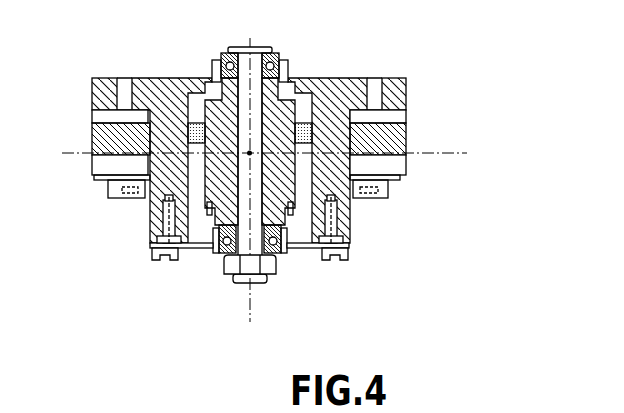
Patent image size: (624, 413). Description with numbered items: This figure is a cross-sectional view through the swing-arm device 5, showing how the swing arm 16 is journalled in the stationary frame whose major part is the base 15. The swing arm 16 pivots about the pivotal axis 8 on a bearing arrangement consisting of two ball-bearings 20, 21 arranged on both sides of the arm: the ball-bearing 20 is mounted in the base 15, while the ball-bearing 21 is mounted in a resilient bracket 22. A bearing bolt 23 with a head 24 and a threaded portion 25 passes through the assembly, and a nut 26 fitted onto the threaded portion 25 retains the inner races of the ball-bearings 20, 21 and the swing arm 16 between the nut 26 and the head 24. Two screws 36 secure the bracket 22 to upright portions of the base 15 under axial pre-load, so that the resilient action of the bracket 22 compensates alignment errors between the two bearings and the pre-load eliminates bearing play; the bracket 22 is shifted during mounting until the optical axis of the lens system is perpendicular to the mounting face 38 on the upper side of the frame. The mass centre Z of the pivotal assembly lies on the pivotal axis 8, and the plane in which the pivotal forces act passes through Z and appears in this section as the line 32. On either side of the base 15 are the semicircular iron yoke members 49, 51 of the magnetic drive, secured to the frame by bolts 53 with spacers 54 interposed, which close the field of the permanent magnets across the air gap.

The drive assembly 5 is at (306, 56).
The pivotal axis 8 is at (258, 317).
The base 15 is at (170, 95).
The swing arm 16 is at (200, 249).
The ball-bearing 20 is at (278, 53).
The ball-bearing 21 is at (222, 254).
The resilient bracket 22 is at (298, 249).
The bearing bolt 23 is at (255, 115).
The head 24 is at (232, 47).
The threaded portion 25 is at (242, 284).
The nut 26 is at (260, 264).
The line 32 is at (438, 152).
The screws 36 is at (158, 262).
The mounting face 38 is at (104, 78).
The iron yoke member 49 is at (393, 117).
The iron yoke member 51 is at (405, 165).
The bolts 53 is at (113, 190).
The spacers 54 is at (105, 139).
The mass centre Z is at (249, 153).